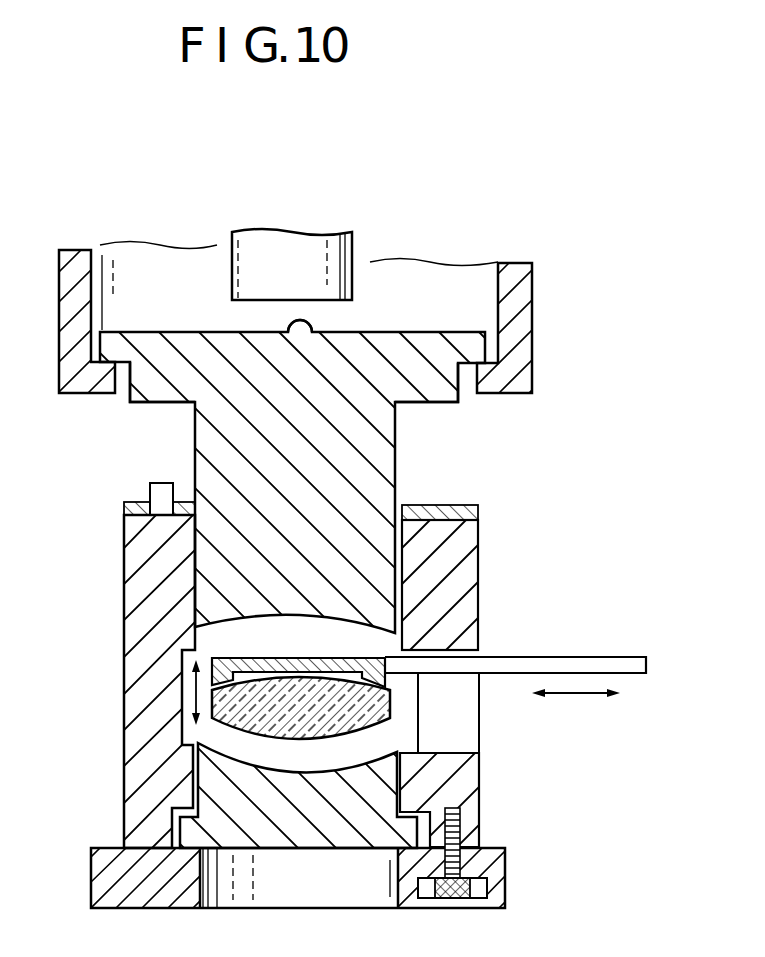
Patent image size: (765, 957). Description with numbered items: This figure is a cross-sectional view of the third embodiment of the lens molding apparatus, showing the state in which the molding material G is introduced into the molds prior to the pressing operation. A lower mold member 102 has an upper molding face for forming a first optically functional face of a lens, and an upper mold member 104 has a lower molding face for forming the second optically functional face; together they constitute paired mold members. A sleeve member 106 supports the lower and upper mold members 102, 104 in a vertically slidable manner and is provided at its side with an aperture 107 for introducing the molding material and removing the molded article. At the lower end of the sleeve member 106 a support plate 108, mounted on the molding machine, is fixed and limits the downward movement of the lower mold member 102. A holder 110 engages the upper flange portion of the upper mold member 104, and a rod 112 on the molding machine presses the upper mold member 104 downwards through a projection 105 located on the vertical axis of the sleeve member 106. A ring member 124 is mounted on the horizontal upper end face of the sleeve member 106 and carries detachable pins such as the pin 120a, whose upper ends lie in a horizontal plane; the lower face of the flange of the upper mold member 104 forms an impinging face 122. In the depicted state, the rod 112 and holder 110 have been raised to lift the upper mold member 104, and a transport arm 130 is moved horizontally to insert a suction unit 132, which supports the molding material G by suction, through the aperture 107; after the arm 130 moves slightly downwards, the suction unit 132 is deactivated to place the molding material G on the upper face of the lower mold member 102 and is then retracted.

The lower mold member 102 is at (382, 795).
The upper mold member 104 is at (372, 480).
The projection 105 is at (300, 320).
The sleeve member 106 is at (150, 678).
The aperture 107 is at (455, 732).
The support plate 108 is at (170, 890).
The holder 110 is at (515, 314).
The rod 112 is at (318, 248).
The pin 120a is at (157, 490).
The impinging face 122 is at (152, 412).
The ring member 124 is at (127, 508).
The transport arm 130 is at (550, 668).
The suction unit 132 is at (262, 657).
The molding material G is at (290, 736).